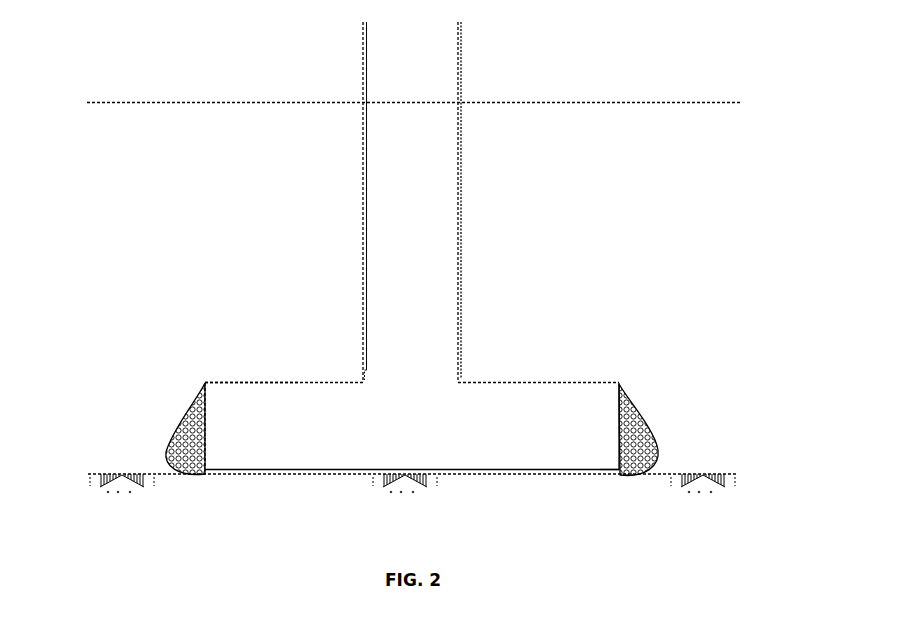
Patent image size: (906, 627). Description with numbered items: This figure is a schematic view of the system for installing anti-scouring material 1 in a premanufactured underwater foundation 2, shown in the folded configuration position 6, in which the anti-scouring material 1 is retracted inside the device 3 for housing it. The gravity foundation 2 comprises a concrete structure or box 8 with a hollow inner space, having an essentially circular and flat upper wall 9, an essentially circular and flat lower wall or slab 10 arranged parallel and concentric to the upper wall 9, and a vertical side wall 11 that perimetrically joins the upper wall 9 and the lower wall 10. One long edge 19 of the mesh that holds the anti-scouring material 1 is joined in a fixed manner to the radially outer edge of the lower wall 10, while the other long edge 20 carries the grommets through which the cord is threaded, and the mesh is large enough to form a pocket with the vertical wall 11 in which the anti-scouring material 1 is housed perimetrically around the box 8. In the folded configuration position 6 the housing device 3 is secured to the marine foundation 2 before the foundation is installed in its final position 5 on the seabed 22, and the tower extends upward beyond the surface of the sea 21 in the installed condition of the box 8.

The anti-scouring material 1 is at (647, 440).
The premanufactured underwater foundation 2 is at (444, 204).
The device for housing the anti-scouring material 3 is at (630, 405).
The final position 5 is at (282, 474).
The folded configuration position 6 is at (672, 429).
The concrete structure or box 8 is at (307, 405).
The upper wall 9 is at (252, 383).
The lower wall or slab 10 is at (472, 470).
The vertical side wall 11 is at (205, 437).
The long edge of the mesh 19 is at (627, 472).
The other long edge of the mesh 20 is at (205, 382).
The surface of the sea 21 is at (258, 102).
The seabed 22 is at (113, 474).